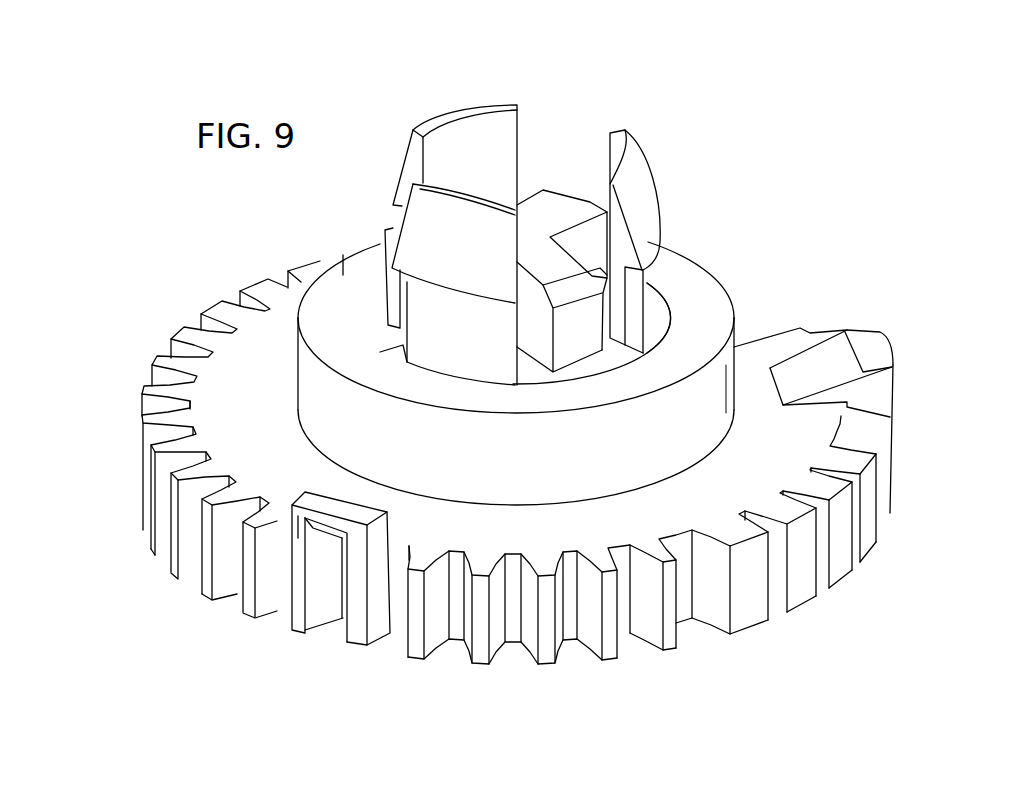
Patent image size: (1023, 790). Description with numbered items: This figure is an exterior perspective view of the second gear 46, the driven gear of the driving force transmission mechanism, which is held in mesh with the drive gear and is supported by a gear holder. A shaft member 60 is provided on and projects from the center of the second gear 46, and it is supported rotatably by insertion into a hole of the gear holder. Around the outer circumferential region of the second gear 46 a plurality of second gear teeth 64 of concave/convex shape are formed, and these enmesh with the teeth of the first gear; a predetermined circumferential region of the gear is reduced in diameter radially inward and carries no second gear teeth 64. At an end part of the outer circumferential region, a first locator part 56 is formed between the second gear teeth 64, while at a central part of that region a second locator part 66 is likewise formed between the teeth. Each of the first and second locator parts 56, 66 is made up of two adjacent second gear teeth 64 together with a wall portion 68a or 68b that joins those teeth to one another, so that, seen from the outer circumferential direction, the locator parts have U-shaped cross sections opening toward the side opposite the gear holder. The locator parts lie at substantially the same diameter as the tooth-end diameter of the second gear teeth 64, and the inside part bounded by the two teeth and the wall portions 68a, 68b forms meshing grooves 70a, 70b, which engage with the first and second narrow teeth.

The second gear 46 is at (815, 302).
The first locator part 56 is at (875, 342).
The shaft member 60 is at (640, 194).
The second gear teeth 64 is at (548, 660).
The second locator part 66 is at (320, 623).
The wall portion 68a is at (807, 377).
The wall portion 68b is at (345, 507).
The meshing groove 70a is at (893, 380).
The meshing groove 70b is at (343, 578).